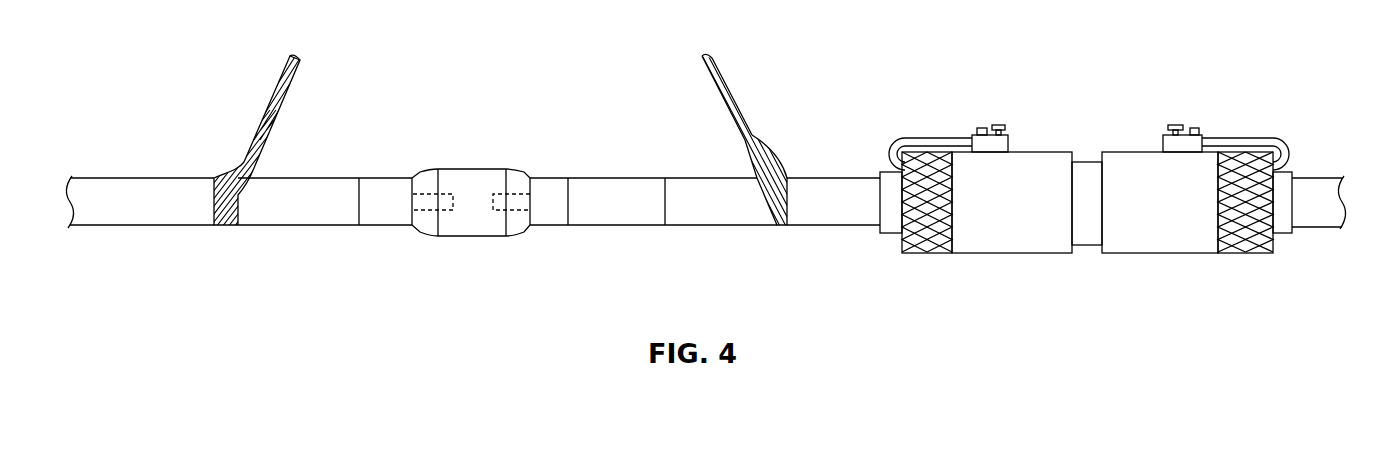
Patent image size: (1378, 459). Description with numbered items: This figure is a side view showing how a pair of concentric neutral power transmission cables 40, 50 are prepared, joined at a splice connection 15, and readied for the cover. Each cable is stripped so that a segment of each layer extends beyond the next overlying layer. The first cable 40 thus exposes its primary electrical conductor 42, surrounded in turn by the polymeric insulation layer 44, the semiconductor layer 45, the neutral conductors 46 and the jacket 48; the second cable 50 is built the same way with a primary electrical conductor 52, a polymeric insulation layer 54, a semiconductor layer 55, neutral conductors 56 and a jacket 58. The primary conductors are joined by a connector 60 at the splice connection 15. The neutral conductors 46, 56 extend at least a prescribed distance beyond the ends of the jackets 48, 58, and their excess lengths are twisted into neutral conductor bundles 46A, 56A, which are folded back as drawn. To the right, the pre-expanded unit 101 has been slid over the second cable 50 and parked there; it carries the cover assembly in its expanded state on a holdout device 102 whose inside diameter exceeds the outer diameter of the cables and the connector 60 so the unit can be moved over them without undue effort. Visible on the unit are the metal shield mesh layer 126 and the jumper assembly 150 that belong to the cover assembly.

The splice connection 15 is at (523, 206).
The electrical power transmission cable 40 is at (242, 161).
The primary electrical conductor 42 is at (447, 210).
The polymeric insulation layer 44 is at (380, 213).
The semiconductor layer 45 is at (318, 213).
The neutral conductors 46 is at (247, 190).
The neutral conductor bundle 46A is at (267, 112).
The jacket 48 is at (160, 192).
The electrical power transmission cable 50 is at (705, 186).
The primary electrical conductor 52 is at (513, 210).
The polymeric insulation layer 54 is at (552, 215).
The semiconductor layer 55 is at (605, 212).
The neutral conductors 56 is at (758, 192).
The neutral conductor bundle 56A is at (770, 168).
The jacket 58 is at (855, 210).
The connector 60 is at (470, 185).
The pre-expanded unit 101 is at (1095, 119).
The holdout device 102 is at (1318, 203).
The metal shield mesh layer 126 is at (1270, 218).
The jumper assembly 150 is at (981, 110).